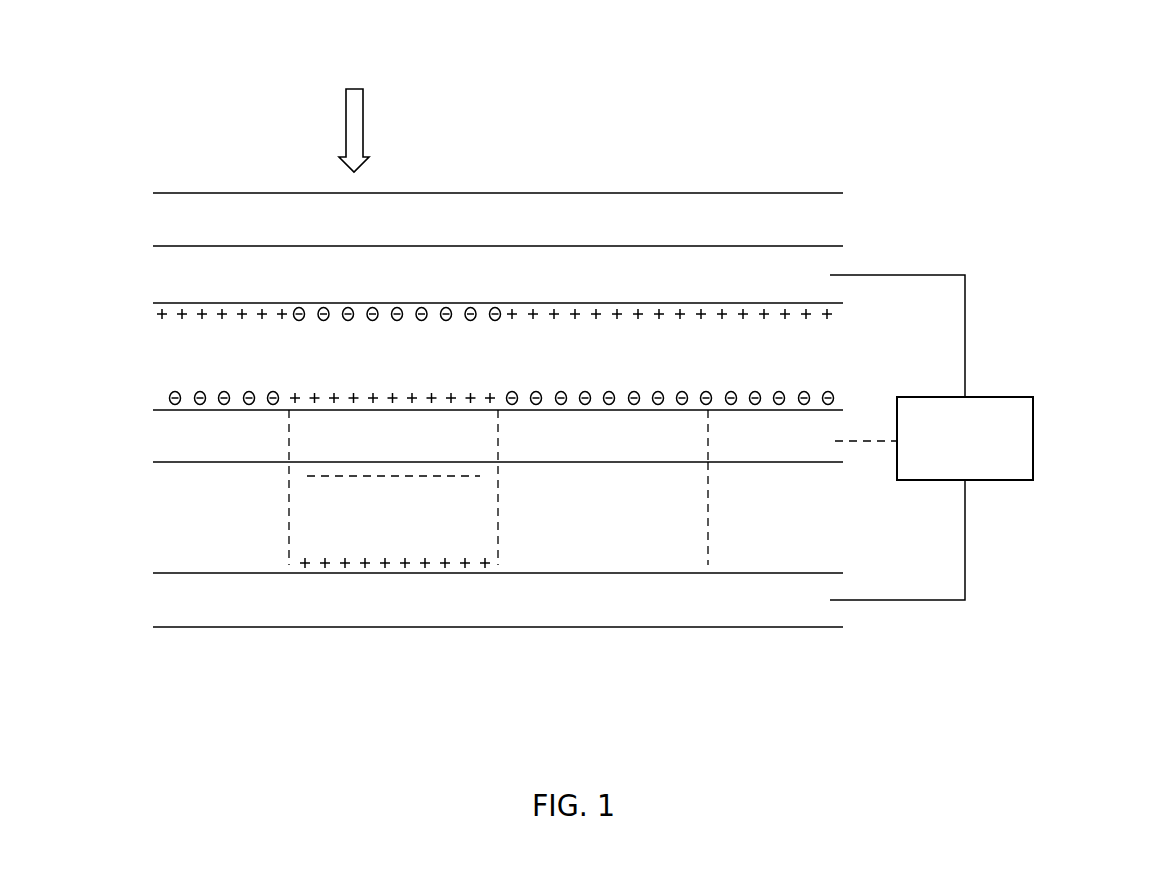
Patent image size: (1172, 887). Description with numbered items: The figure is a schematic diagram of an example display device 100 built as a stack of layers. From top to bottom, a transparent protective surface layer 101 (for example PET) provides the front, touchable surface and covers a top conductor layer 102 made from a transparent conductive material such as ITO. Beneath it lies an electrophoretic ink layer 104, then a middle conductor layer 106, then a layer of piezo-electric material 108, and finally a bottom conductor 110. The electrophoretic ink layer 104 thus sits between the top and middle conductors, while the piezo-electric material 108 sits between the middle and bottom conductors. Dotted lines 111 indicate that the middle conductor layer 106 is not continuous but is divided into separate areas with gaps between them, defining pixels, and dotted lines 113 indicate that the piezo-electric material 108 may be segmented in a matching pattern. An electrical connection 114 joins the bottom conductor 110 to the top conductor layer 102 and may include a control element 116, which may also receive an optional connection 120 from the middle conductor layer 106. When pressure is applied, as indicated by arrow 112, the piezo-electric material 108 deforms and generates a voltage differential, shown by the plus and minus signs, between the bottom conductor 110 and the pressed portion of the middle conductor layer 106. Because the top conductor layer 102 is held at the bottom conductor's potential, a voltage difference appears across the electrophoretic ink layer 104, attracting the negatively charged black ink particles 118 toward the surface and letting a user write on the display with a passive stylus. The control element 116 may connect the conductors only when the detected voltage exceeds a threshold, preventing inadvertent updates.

The display device 100 is at (649, 98).
The protective surface layer 101 is at (168, 220).
The top conductor layer 102 is at (168, 275).
The electrophoretic ink layer 104 is at (168, 353).
The middle conductor layer 106 is at (168, 436).
The piezo-electric material 108 is at (168, 516).
The bottom conductor 110 is at (168, 598).
The dotted lines 111 is at (708, 440).
The arrow 112 is at (363, 107).
The dotted lines 113 is at (708, 518).
The electrical connection 114 is at (965, 320).
The control element 116 is at (1033, 434).
The negatively charged black ink particles 118 is at (833, 396).
The optional connection 120 is at (872, 442).